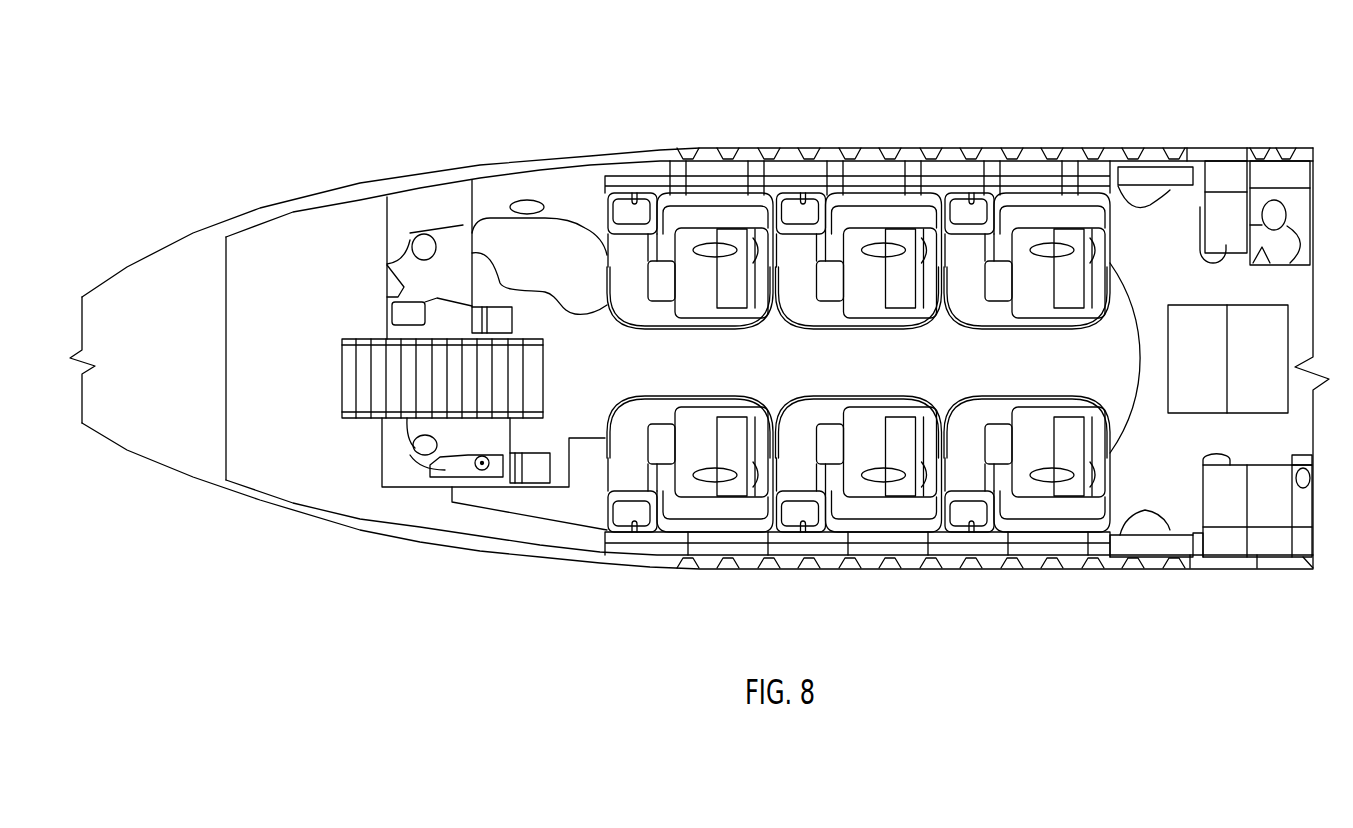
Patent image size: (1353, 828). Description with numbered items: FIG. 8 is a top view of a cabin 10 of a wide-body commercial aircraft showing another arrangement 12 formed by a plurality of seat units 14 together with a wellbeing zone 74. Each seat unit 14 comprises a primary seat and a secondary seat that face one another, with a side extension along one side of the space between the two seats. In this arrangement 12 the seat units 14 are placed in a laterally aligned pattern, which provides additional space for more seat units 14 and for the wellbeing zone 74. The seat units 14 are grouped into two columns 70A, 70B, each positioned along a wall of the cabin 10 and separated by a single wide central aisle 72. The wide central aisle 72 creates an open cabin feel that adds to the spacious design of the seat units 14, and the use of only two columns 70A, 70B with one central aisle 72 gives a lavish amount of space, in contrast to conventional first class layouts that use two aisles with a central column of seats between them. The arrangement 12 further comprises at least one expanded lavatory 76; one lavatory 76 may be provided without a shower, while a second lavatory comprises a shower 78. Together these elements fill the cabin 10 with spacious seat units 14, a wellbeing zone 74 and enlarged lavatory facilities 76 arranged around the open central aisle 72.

The cabin 10 is at (587, 153).
The arrangement 12 is at (413, 557).
The seat unit 14 is at (865, 398).
The column of seat units 70A is at (606, 503).
The column of seat units 70B is at (583, 250).
The central aisle 72 is at (950, 352).
The wellbeing zone 74 is at (517, 235).
The expanded lavatory 76 is at (418, 208).
The shower 78 is at (402, 315).